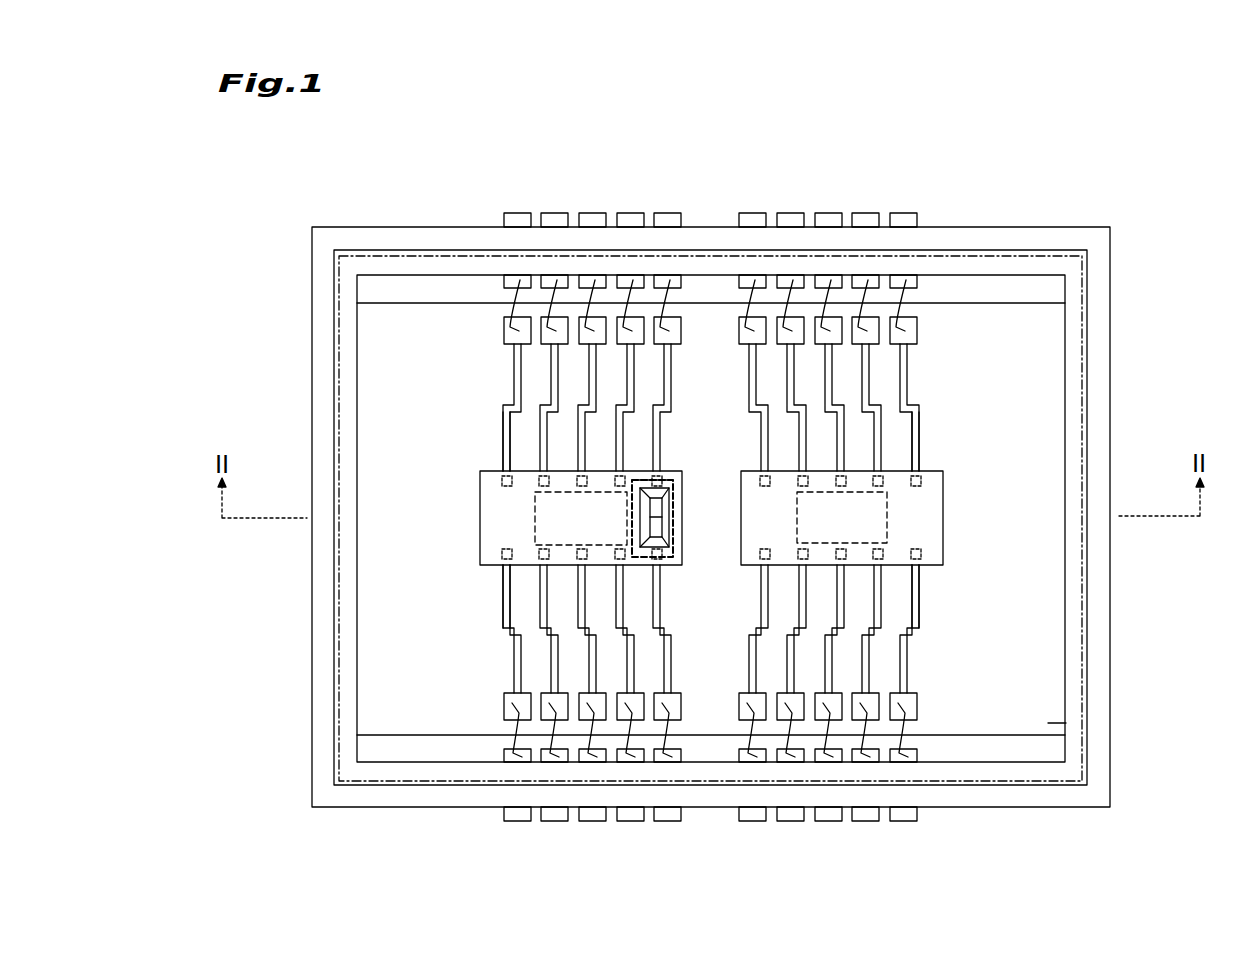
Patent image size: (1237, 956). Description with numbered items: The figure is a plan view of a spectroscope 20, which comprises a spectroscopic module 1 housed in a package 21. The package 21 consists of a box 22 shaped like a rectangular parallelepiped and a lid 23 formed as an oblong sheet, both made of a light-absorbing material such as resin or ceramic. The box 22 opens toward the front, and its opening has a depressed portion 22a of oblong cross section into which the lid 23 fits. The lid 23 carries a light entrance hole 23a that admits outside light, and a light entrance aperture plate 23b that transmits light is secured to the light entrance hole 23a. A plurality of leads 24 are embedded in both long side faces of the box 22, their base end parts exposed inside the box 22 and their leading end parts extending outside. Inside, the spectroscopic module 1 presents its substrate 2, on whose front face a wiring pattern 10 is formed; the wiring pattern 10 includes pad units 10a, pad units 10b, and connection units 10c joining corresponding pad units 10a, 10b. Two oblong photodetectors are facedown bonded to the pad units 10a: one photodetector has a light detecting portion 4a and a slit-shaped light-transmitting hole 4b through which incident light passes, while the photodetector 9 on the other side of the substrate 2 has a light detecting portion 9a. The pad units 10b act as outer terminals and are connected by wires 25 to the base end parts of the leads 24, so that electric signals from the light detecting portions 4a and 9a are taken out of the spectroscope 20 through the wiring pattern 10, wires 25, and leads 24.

The spectroscopic module 1 is at (1066, 318).
The substrate 2 is at (1052, 723).
The light detecting portion 4a is at (535, 515).
The light-transmitting hole 4b is at (673, 557).
The photodetector 9 is at (740, 527).
The light detecting portion 9a is at (887, 515).
The wiring pattern 10 is at (514, 378).
The pad units 10a is at (502, 486).
The pad units 10b is at (504, 330).
The connection units 10c is at (503, 440).
The spectroscope 20 is at (1078, 160).
The package 21 is at (1081, 226).
The box 22 is at (330, 303).
The depressed portion 22a is at (337, 257).
The lid 23 is at (338, 418).
The light entrance hole 23a is at (675, 517).
The light entrance aperture plate 23b is at (673, 482).
The leads 24 is at (592, 213).
The wires 25 is at (510, 297).